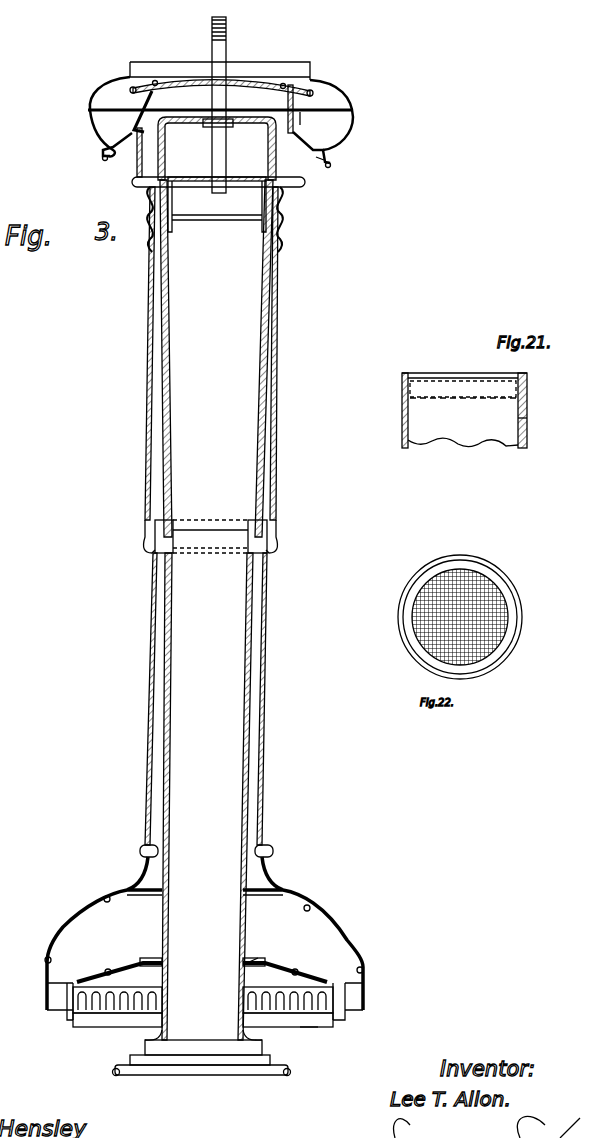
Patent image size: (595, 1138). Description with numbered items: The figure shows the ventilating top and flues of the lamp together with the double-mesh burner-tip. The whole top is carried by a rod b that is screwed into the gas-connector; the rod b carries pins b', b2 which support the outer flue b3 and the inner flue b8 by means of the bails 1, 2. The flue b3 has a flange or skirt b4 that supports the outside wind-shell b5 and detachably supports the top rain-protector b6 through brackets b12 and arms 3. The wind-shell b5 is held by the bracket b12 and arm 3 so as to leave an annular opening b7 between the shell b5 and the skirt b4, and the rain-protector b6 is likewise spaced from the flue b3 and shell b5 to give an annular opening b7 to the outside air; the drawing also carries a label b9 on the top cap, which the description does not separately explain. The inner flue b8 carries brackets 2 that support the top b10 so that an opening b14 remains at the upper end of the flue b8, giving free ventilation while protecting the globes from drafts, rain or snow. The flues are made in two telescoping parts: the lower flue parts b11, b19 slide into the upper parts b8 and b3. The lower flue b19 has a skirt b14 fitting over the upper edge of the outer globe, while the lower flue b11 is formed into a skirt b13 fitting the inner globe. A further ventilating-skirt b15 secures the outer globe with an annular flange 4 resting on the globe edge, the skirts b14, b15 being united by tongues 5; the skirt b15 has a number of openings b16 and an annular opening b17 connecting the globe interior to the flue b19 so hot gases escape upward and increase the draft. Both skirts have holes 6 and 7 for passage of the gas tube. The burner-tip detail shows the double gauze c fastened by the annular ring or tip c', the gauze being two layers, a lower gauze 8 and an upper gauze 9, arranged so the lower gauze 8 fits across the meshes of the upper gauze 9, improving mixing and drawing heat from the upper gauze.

In FIG. 3, the rod b is at (203, 105).
In FIG. 3, the pin b' is at (224, 140).
In FIG. 3, the pin b2 is at (242, 232).
In FIG. 3, the flue b3 is at (279, 345).
In FIG. 3, the flange or skirt b4 is at (297, 191).
In FIG. 3, the wind-shell b5 is at (338, 140).
In FIG. 3, the rain-protector b6 is at (277, 84).
In FIG. 3, the annular opening b7 is at (323, 160).
In FIG. 3, the inner flue b8 is at (173, 384).
In FIG. 3, the cap dome b9 is at (303, 100).
In FIG. 3, the top b10 is at (199, 168).
In FIG. 3, the lower part of the flue b11 is at (207, 796).
In FIG. 3, the bracket b12 is at (302, 118).
In FIG. 3, the skirt b13 is at (171, 1072).
In FIG. 3, the opening / skirt b14 is at (379, 1010).
In FIG. 3, the ventilating-skirt b15 is at (321, 1022).
In FIG. 3, the openings b16 is at (68, 1020).
In FIG. 3, the annular opening b17 is at (252, 962).
In FIG. 3, the lower part of the flue b19 is at (266, 702).
In FIG. 3, the bail 1 is at (158, 150).
In FIG. 3, the bail / bracket 2 is at (172, 197).
In FIG. 3, the arm 3 is at (305, 132).
In FIG. 3, the annular flange 4 is at (322, 1027).
In FIG. 3, the tongues 5 is at (60, 988).
In FIG. 3, the hole 6 is at (110, 905).
In FIG. 3, the hole 7 is at (110, 966).
In FIG. 21, the lower gauze 8 is at (452, 386).
In FIG. 21, the upper gauze 9 is at (458, 379).
In FIG. 22, the upper gauze 9 is at (480, 575).
In FIG. 21, the double gauze c is at (464, 410).
In FIG. 21, the annular ring or tip c' is at (532, 419).
In FIG. 22, the annular ring or tip c' is at (471, 617).